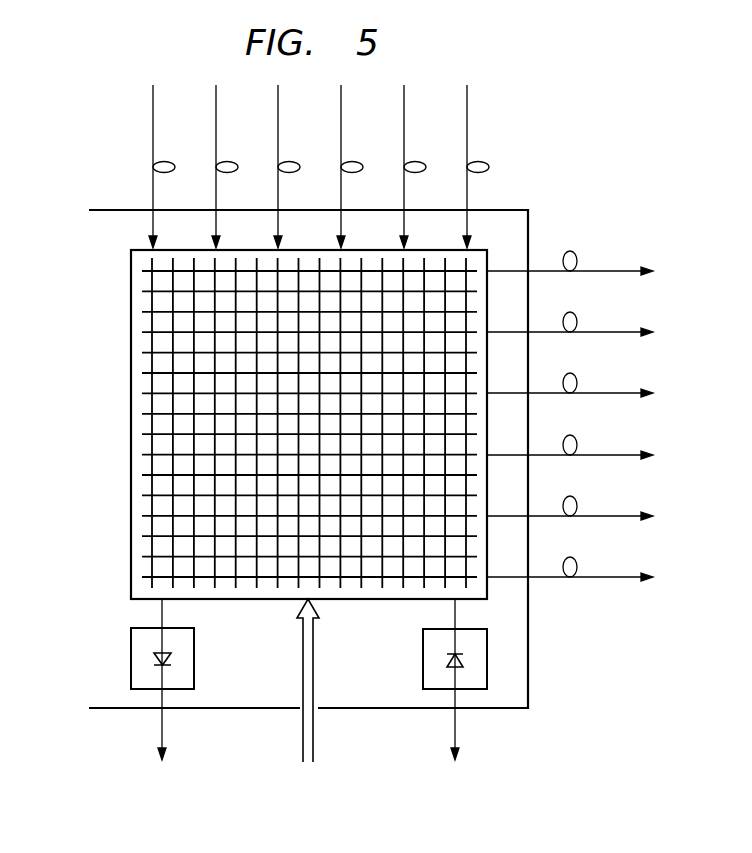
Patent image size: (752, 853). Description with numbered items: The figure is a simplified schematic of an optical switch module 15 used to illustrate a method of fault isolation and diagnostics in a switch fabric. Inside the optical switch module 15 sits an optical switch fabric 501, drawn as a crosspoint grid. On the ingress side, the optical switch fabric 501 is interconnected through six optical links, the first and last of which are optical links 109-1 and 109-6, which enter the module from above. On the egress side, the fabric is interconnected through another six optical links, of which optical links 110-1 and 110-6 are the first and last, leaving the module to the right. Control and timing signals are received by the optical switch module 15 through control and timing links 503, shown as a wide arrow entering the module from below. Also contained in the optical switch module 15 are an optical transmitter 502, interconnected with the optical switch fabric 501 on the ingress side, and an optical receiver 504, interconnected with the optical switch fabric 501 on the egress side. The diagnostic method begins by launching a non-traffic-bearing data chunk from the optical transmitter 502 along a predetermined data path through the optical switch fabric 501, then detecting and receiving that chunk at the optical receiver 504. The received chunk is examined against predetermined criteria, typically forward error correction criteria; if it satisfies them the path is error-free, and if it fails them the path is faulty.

The optical switch module 15 is at (89, 448).
The optical switch fabric 501 is at (267, 600).
The optical link 109-6 is at (153, 115).
The optical link 109-1 is at (467, 116).
The optical link 110-1 is at (612, 269).
The optical link 110-6 is at (608, 579).
The optical transmitter 502 is at (194, 659).
The control and timing links 503 is at (303, 733).
The optical receiver 504 is at (423, 660).